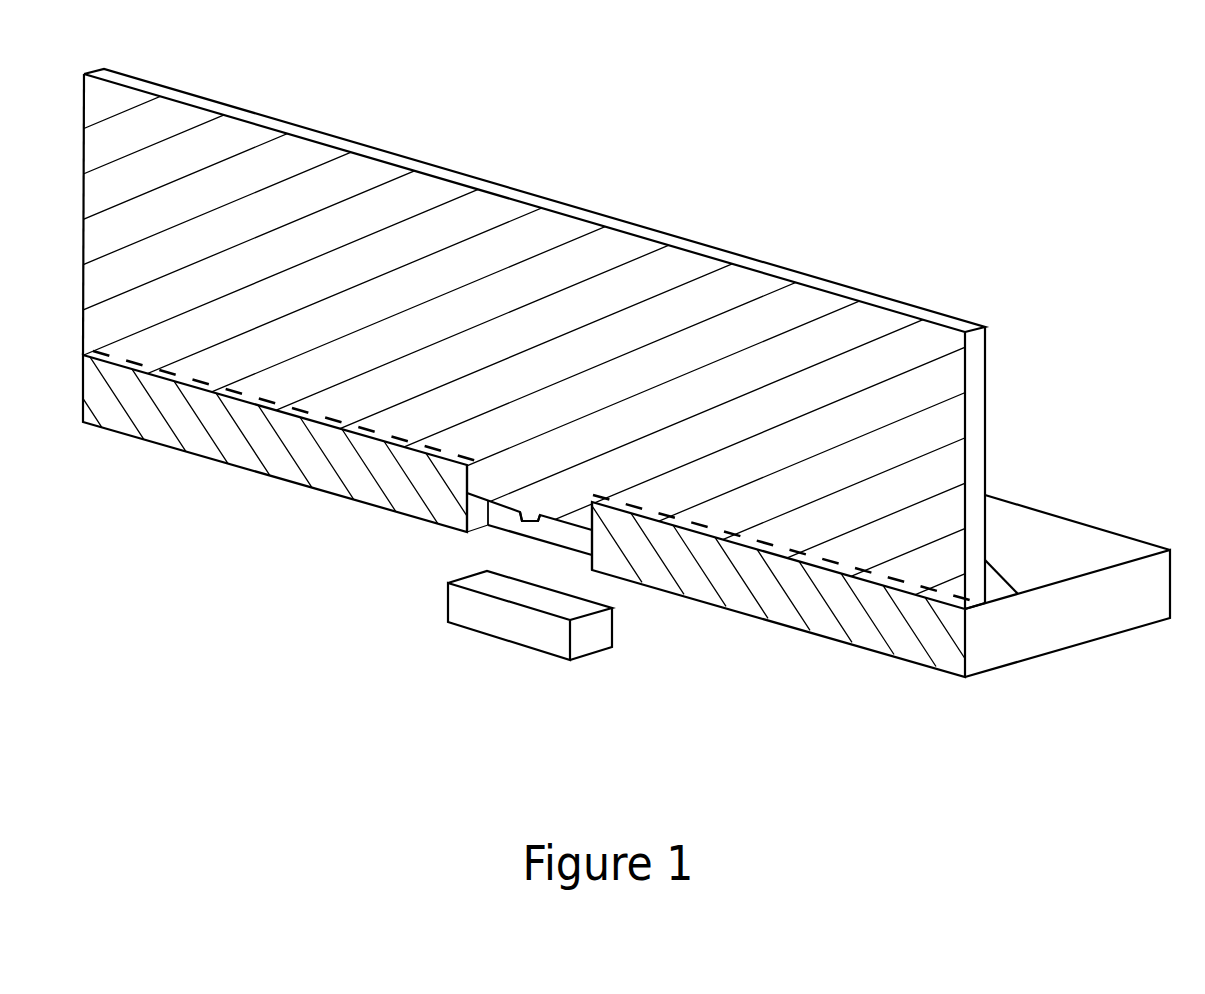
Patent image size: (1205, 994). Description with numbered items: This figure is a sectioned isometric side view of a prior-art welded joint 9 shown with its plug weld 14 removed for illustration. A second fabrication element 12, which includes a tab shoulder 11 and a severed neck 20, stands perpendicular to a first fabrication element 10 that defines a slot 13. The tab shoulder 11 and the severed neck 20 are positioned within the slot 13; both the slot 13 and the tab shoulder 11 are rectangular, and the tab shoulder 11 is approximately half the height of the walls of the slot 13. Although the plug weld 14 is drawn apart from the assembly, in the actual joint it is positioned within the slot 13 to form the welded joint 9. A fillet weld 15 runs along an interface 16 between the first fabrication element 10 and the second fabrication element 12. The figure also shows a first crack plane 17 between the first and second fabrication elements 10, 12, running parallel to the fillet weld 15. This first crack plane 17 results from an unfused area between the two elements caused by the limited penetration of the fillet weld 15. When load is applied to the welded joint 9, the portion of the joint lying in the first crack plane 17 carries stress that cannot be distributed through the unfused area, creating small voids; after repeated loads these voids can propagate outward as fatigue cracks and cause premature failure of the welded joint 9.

The welded joint 9 is at (557, 552).
The first fabrication element 10 is at (780, 626).
The tab shoulder 11 is at (485, 501).
The second fabrication element 12 is at (763, 262).
The slot 13 is at (491, 508).
The plug weld 14 is at (546, 628).
The fillet weld 15 is at (995, 580).
The interface 16 is at (988, 607).
The first crack plane 17 is at (452, 448).
The severed neck 20 is at (537, 517).